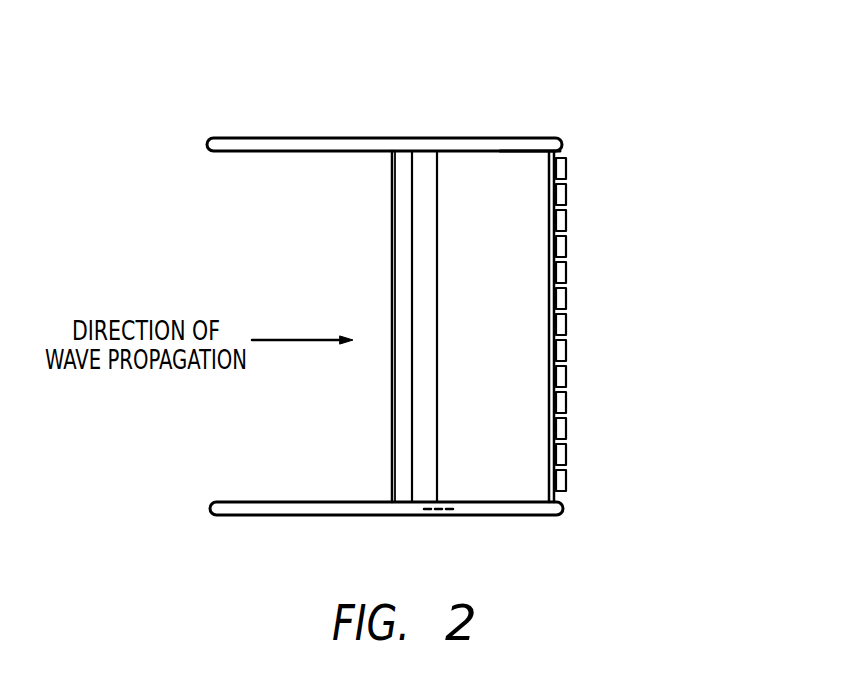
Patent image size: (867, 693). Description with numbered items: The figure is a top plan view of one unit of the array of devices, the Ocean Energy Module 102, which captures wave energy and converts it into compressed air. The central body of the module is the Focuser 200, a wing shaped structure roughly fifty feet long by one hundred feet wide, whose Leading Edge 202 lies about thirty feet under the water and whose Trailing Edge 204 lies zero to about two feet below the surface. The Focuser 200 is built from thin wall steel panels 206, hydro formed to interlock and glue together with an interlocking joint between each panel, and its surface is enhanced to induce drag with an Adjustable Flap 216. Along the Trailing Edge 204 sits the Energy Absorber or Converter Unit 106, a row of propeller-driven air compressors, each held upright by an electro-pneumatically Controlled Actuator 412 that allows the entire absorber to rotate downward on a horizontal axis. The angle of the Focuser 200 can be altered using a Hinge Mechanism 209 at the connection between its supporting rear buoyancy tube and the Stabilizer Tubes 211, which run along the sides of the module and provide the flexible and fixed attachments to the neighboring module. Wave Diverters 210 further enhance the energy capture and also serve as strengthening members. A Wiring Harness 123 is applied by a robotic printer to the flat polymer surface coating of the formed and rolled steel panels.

The Ocean Energy Module 102 is at (648, 85).
The Energy Absorber or Converter Unit 106 is at (559, 176).
The Wiring Harness 123 is at (442, 514).
The Focuser 200 is at (398, 482).
The Leading Edge 202 is at (396, 410).
The Trailing Edge 204 is at (537, 157).
The thin wall steel panels 206 is at (405, 288).
The Hinge Mechanism 209 is at (561, 508).
The Wave Diverters 210 is at (550, 367).
The Stabilizer Tubes 211 is at (358, 150).
The Adjustable Flap 216 is at (426, 217).
The Controlled Actuator 412 is at (551, 459).